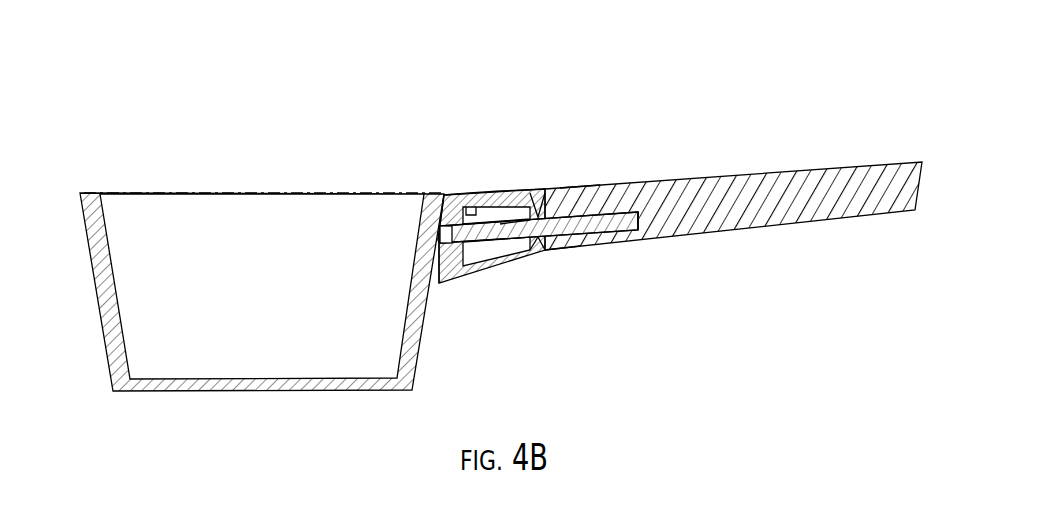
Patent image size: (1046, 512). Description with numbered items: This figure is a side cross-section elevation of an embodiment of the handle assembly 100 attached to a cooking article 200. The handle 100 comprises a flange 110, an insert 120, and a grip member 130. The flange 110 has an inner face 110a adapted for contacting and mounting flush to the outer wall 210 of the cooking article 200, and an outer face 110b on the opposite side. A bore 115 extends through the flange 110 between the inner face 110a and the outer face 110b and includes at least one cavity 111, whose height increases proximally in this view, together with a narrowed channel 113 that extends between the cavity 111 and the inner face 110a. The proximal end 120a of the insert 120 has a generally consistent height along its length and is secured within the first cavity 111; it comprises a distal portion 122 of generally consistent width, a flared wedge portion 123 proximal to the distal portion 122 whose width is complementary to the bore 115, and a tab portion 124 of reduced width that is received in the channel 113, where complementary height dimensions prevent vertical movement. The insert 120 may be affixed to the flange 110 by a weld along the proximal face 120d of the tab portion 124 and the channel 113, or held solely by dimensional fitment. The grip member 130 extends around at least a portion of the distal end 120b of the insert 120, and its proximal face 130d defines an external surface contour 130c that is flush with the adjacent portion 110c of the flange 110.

The handle assembly 100 is at (733, 201).
The flange 110 is at (509, 202).
The inner face 110a is at (433, 193).
The outer face 110b is at (577, 195).
The adjacent portion 110c is at (545, 175).
The first cavity 111 is at (477, 196).
The narrowed channel 113 is at (432, 262).
The bore 115 is at (461, 200).
The insert 120 is at (530, 221).
The proximal end of the insert 120a is at (513, 195).
The distal end of the insert 120b is at (650, 219).
The proximal face 120d is at (440, 234).
The distal portion 122 is at (520, 258).
The flared wedge portion 123 is at (491, 217).
The tab portion 124 is at (441, 198).
The grip member 130 is at (733, 227).
The external surface contour 130c is at (573, 195).
The proximal face 130d is at (546, 252).
The cooking article 200 is at (278, 211).
The outer wall 210 is at (420, 355).